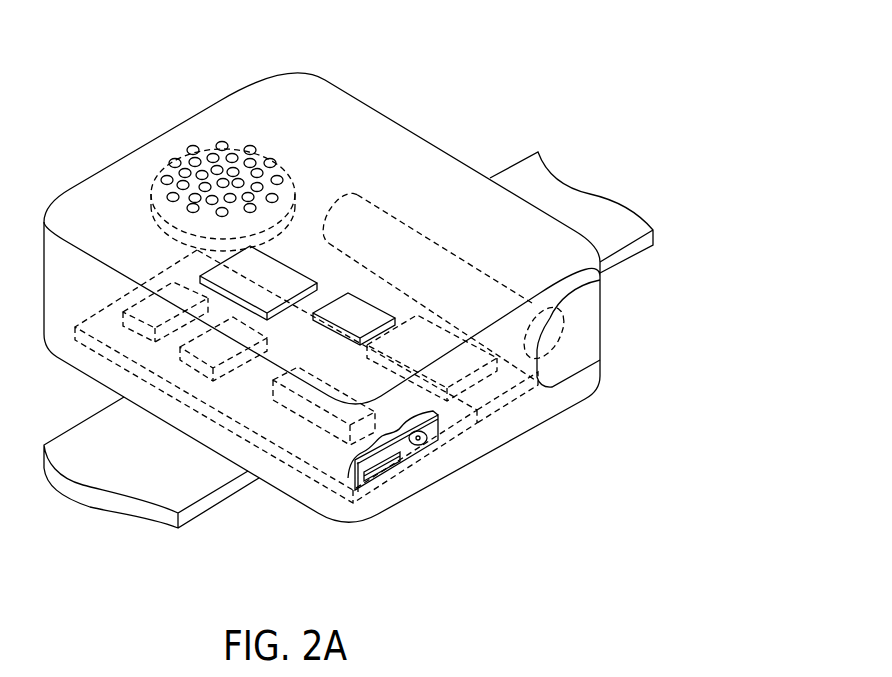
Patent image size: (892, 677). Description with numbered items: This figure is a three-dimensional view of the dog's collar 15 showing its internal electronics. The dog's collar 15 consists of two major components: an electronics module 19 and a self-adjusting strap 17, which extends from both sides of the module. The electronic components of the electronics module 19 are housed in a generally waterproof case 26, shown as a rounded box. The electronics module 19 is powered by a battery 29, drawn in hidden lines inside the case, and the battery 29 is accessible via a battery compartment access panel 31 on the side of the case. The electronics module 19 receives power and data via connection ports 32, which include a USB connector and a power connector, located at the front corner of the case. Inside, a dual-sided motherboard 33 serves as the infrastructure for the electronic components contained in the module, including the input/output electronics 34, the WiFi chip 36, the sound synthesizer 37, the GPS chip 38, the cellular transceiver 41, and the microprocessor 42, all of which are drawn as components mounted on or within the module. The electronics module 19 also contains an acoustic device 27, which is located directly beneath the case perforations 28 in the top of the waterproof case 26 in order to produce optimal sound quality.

The dog's collar 15 is at (539, 60).
The self-adjusting strap 17 is at (135, 460).
The electronics module 19 is at (342, 60).
The waterproof case 26 is at (283, 90).
The acoustic device 27 is at (156, 206).
The case perforations 28 is at (222, 124).
The battery 29 is at (413, 230).
The battery compartment access panel 31 is at (577, 360).
The connection ports 32 is at (360, 493).
The dual-sided motherboard 33 is at (410, 463).
The input/output electronics 34 is at (307, 420).
The WiFi chip 36 is at (470, 397).
The sound synthesizer 37 is at (140, 302).
The GPS chip 38 is at (214, 372).
The cellular transceiver 41 is at (345, 309).
The microprocessor 42 is at (272, 258).